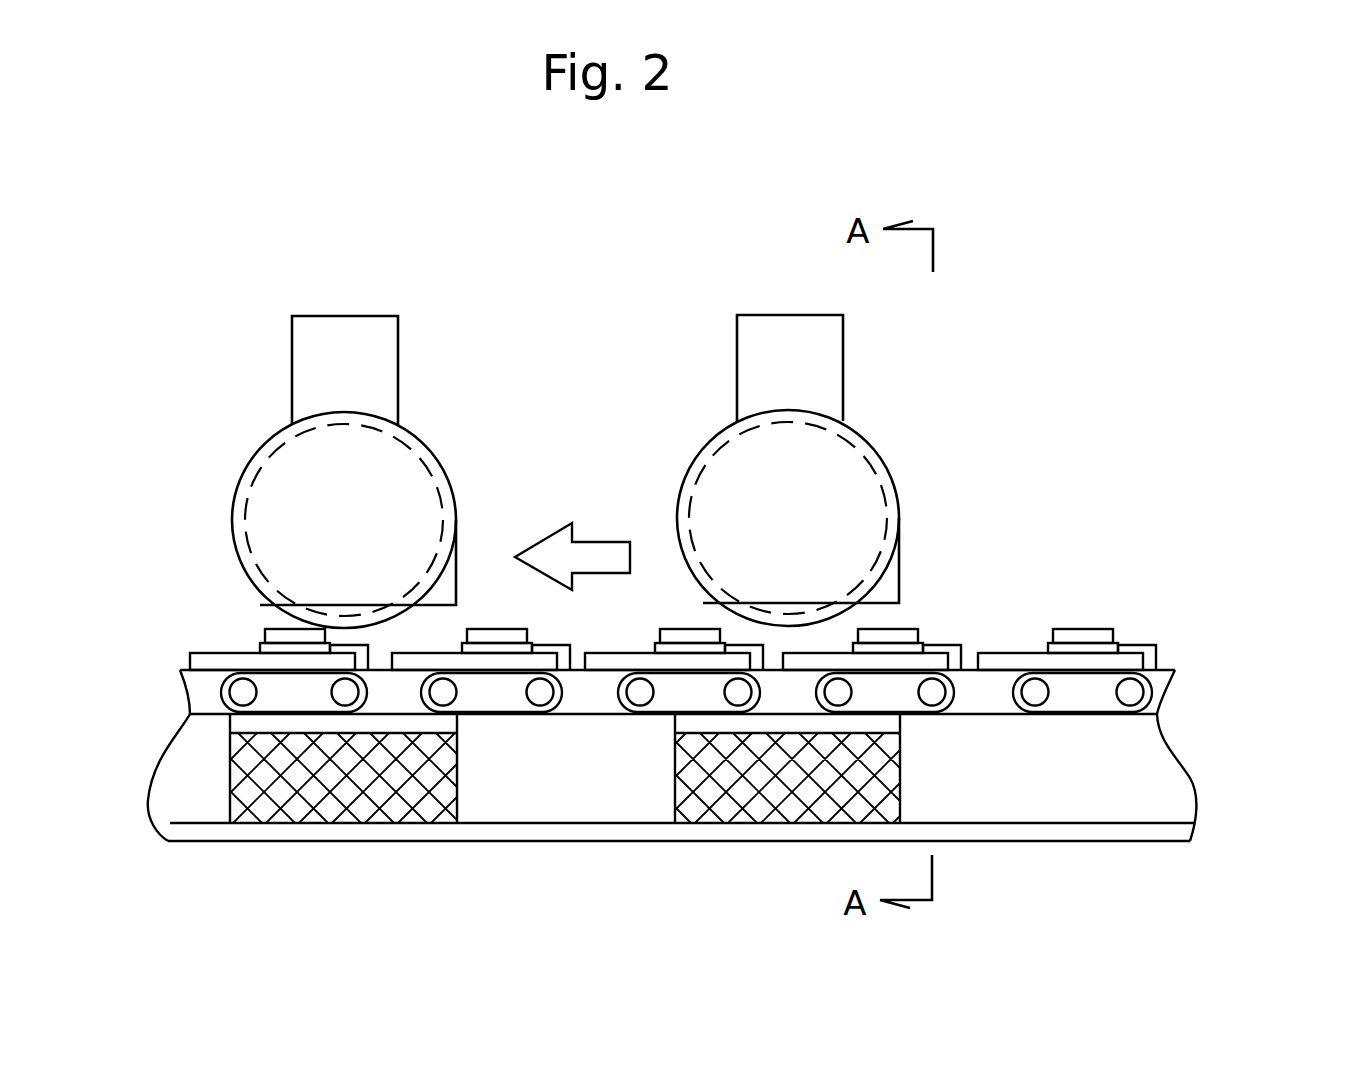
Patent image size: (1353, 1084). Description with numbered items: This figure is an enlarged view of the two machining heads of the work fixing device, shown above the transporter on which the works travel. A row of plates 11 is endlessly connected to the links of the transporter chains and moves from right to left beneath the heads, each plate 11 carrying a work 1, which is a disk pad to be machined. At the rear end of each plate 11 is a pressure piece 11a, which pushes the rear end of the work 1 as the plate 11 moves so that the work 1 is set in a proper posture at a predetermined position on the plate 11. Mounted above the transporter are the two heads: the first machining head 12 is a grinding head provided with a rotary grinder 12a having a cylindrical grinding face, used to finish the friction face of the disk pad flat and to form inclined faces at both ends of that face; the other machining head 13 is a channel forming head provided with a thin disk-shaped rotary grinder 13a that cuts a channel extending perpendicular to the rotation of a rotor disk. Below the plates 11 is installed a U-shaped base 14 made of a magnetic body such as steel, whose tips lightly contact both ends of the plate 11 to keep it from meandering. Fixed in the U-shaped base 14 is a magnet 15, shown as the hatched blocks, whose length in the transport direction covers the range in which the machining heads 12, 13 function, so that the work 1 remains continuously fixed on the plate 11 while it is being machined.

The work 1 is at (492, 633).
The plate 11 is at (440, 663).
The pressure piece 11a is at (565, 663).
The first machining head 12 is at (843, 380).
The rotary grinder 12a is at (884, 497).
The machining head 13 is at (292, 370).
The rotary grinder 13a is at (243, 510).
The U-shaped base 14 is at (1145, 785).
The magnet 15 is at (272, 775).